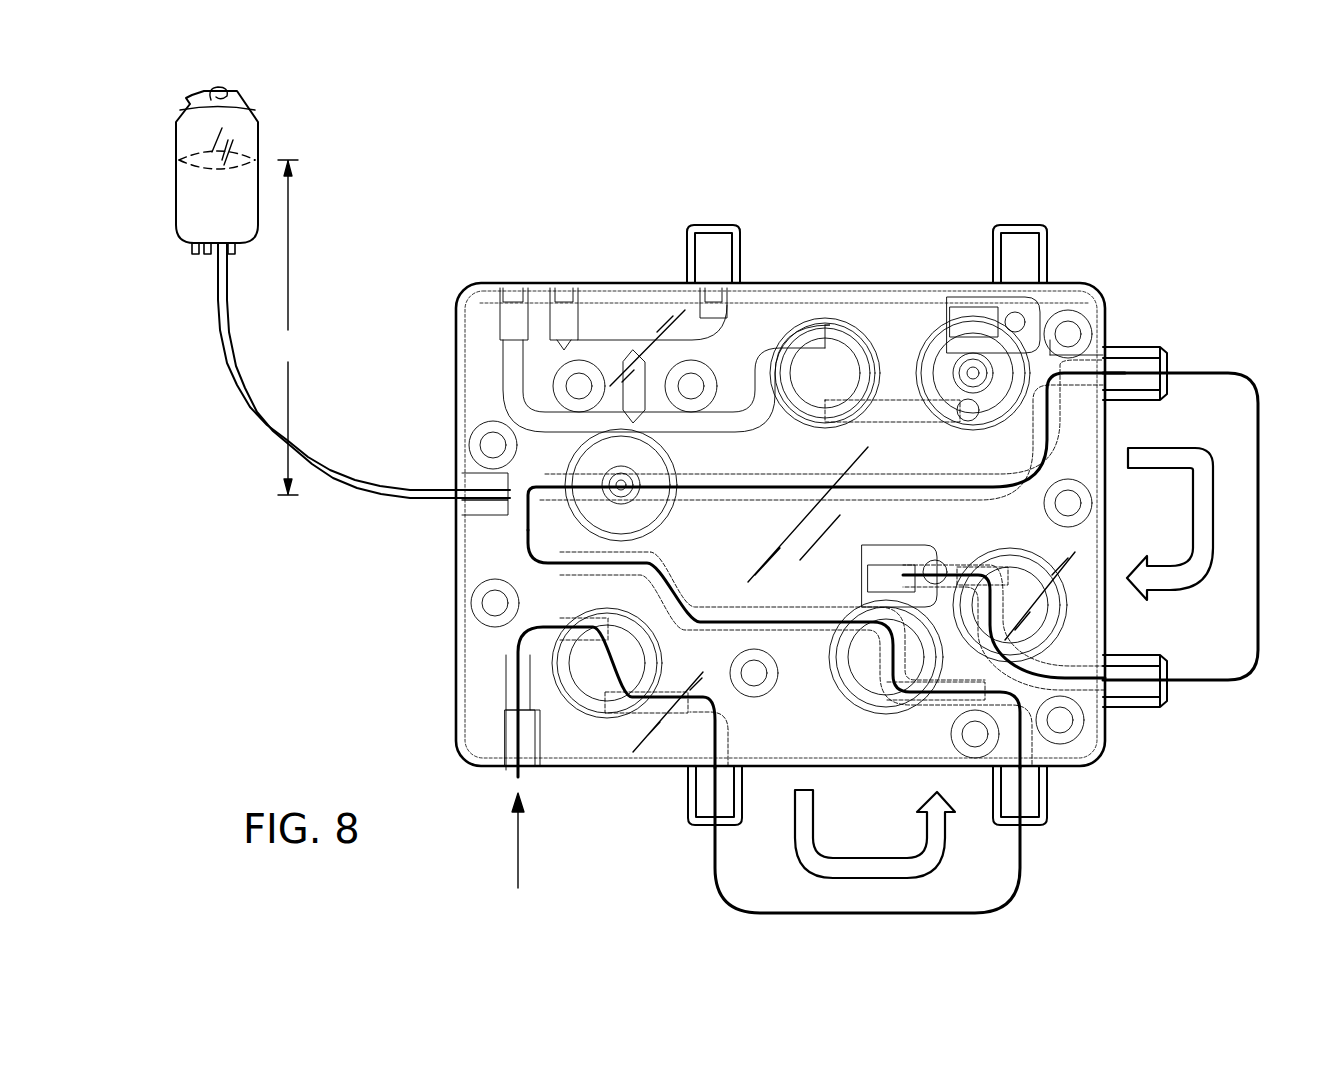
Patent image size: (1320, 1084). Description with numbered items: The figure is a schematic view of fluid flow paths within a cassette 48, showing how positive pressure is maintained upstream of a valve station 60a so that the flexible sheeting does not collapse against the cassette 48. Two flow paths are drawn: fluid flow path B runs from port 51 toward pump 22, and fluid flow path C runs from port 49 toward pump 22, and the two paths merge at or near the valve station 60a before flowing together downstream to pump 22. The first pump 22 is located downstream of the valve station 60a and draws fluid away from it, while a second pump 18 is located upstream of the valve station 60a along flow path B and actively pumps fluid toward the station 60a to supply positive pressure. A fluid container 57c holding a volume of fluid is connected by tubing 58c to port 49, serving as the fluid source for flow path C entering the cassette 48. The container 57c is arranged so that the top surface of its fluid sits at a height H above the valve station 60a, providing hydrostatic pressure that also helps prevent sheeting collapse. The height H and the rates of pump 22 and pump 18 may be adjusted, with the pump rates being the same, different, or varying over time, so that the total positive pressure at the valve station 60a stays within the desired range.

The cassette 48 is at (1127, 791).
The fluid container 57c is at (240, 136).
The tubing 58c is at (226, 352).
The height H is at (288, 327).
The fluid flow path C is at (477, 487).
The port 49 is at (490, 497).
The valve station 60a is at (603, 513).
The fluid flow path B is at (518, 682).
The port 51 is at (512, 730).
The additive solution pump 22 is at (1155, 447).
The whole blood pump 18 is at (877, 868).